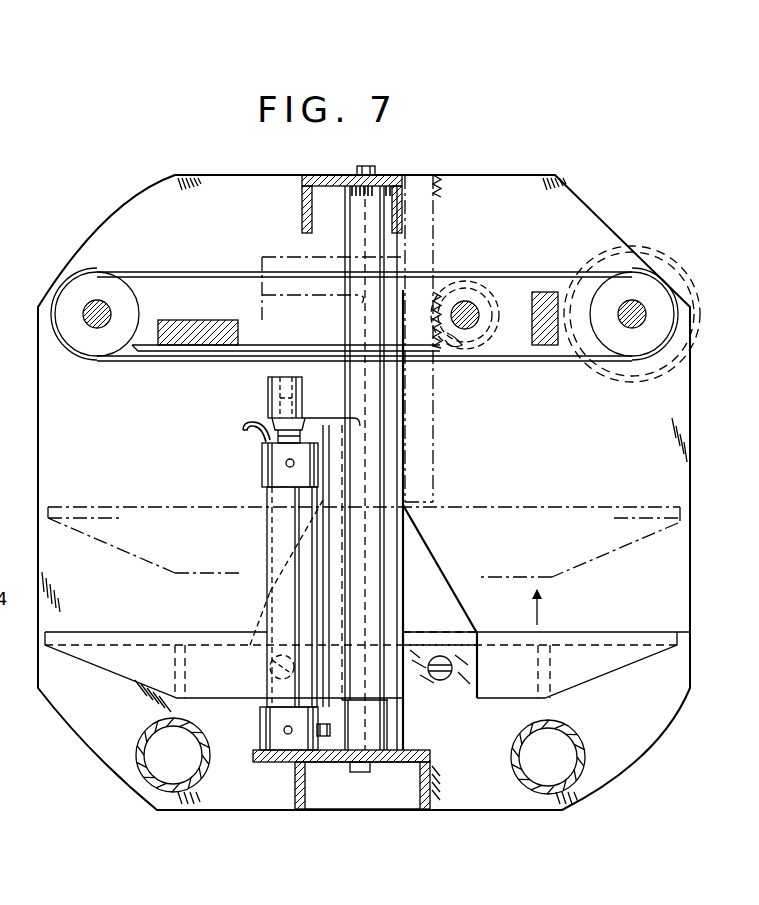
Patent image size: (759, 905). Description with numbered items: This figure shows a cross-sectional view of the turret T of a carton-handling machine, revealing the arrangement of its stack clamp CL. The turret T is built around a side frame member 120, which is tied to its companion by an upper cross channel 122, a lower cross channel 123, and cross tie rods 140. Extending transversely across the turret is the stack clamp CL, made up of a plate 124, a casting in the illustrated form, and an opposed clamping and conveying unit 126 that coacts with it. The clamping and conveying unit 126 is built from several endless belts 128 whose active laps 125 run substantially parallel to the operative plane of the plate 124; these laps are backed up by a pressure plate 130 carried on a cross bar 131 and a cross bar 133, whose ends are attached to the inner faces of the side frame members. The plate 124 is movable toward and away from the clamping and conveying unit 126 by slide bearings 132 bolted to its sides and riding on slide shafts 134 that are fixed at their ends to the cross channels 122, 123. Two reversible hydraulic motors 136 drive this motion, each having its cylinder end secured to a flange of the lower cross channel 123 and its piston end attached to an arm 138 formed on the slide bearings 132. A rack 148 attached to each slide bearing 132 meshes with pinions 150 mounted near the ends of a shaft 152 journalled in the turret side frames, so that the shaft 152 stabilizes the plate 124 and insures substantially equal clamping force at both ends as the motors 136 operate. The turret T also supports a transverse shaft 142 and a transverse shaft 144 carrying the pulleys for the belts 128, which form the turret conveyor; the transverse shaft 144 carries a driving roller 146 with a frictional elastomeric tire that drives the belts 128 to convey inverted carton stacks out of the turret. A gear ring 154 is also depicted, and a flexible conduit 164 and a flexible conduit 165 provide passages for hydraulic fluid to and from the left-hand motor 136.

The turret T is at (654, 747).
The side frame member 120 is at (112, 462).
The upper cross channel 122 is at (317, 205).
The lower cross channel 123 is at (417, 789).
The plate 124 is at (606, 505).
The active laps 125 is at (556, 364).
The clamping and conveying unit 126 is at (190, 369).
The endless belts 128 is at (108, 358).
The pressure plate 130 is at (272, 348).
The cross bar 131 is at (191, 322).
The slide bearings 132 is at (395, 548).
The cross bar 133 is at (545, 297).
The slide shafts 134 is at (380, 241).
The reversible hydraulic motors 136 is at (268, 533).
The arm 138 is at (296, 382).
The cross tie rods 140 is at (150, 727).
The transverse shaft 142 is at (97, 305).
The transverse shaft 144 is at (640, 308).
The driving roller 146 is at (675, 281).
The rack 148 is at (426, 418).
The pinions 150 is at (448, 342).
The shaft 152 is at (466, 312).
The gear ring 154 is at (490, 333).
The flexible conduit 164 is at (247, 433).
The flexible conduit 165 is at (324, 742).
The stack clamp CL is at (496, 505).